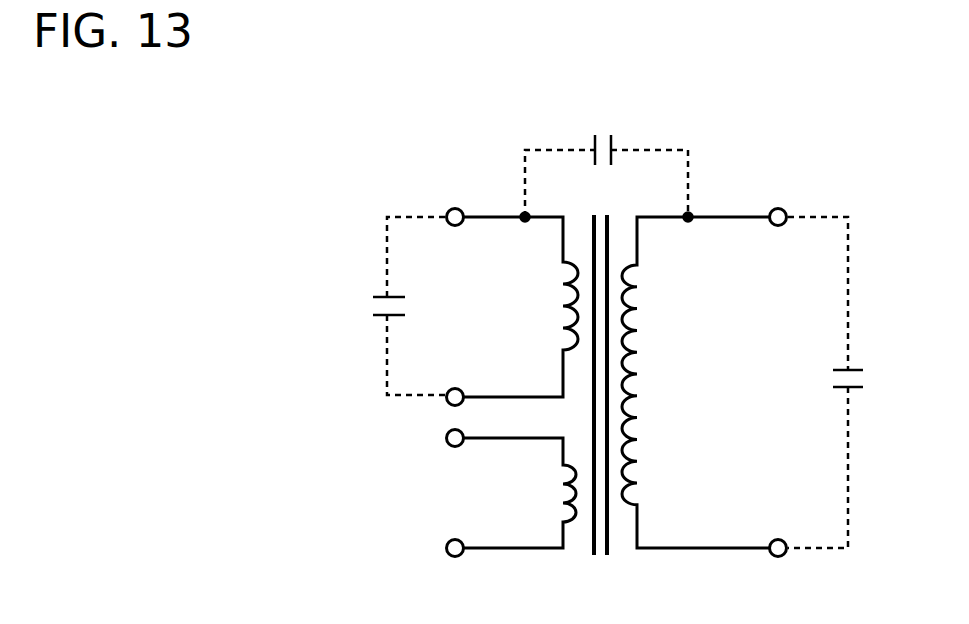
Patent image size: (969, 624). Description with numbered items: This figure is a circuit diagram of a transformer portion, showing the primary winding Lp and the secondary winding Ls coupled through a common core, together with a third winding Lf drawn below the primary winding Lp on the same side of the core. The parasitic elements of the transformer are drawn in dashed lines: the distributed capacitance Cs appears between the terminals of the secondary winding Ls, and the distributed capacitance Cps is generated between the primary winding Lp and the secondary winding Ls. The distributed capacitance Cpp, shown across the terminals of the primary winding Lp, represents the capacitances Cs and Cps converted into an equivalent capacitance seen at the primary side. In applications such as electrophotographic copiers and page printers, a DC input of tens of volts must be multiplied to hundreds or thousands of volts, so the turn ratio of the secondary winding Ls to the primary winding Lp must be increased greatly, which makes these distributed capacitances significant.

The primary winding Lp is at (513, 307).
The secondary winding Ls is at (704, 383).
The feedback winding inductance Lf is at (512, 493).
The distributed capacitance between primary winding terminals Cpp is at (377, 306).
The distributed capacitance between primary and secondary windings Cps is at (607, 159).
The distributed capacitance between secondary winding terminals Cs is at (847, 382).